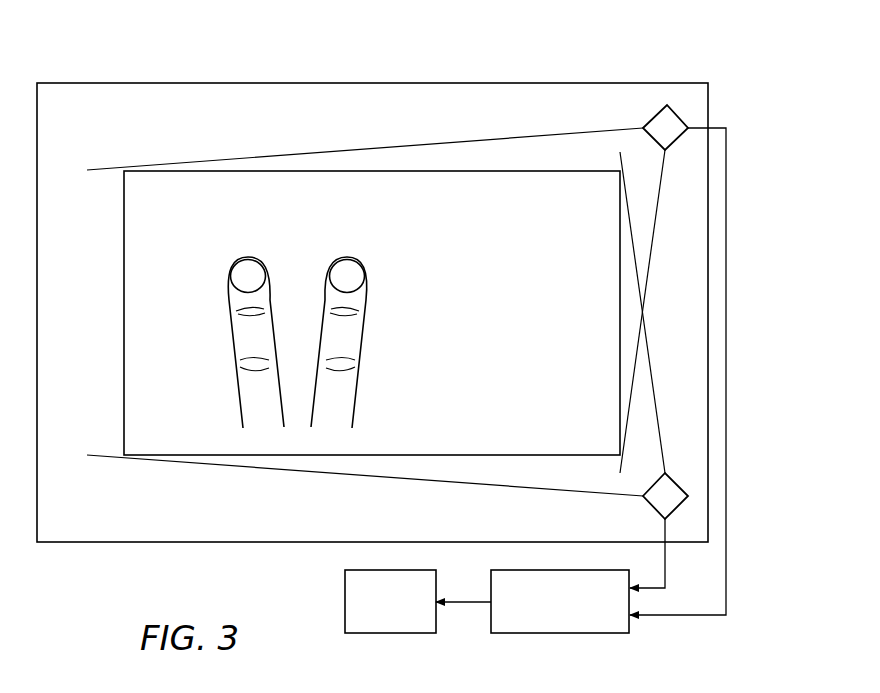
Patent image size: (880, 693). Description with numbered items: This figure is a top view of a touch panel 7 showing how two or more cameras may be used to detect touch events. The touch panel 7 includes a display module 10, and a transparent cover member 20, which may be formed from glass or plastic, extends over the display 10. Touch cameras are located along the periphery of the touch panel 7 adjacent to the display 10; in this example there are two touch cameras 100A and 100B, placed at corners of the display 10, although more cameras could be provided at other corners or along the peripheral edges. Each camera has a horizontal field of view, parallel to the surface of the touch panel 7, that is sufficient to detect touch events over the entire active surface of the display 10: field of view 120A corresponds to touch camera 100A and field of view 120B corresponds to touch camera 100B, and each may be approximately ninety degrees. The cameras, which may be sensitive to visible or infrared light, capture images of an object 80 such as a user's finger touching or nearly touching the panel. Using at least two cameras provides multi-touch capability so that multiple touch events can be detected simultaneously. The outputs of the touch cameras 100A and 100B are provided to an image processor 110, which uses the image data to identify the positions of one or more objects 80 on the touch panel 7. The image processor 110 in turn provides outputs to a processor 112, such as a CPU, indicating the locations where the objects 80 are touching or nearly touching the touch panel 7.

The touch panel 7 is at (141, 49).
The cover member 20 is at (262, 87).
The display module 10 is at (122, 276).
The touch camera 100A is at (677, 120).
The touch camera 100B is at (675, 505).
The field of view 120A is at (660, 175).
The field of view 120B is at (660, 450).
The object 80 is at (338, 258).
The processor 112 is at (392, 633).
The image processor 110 is at (557, 633).